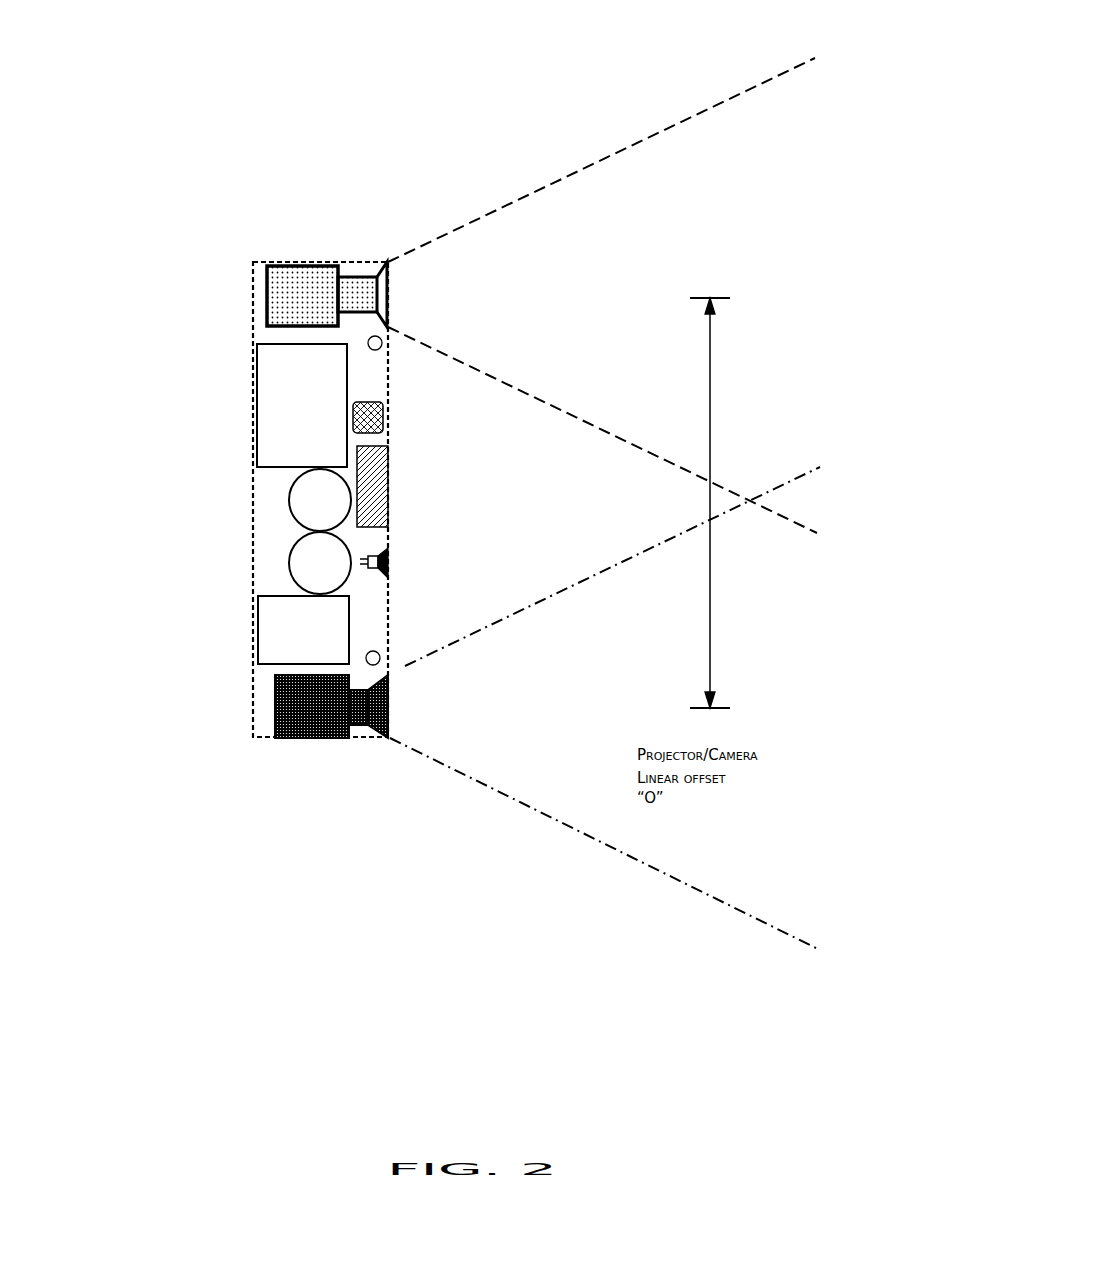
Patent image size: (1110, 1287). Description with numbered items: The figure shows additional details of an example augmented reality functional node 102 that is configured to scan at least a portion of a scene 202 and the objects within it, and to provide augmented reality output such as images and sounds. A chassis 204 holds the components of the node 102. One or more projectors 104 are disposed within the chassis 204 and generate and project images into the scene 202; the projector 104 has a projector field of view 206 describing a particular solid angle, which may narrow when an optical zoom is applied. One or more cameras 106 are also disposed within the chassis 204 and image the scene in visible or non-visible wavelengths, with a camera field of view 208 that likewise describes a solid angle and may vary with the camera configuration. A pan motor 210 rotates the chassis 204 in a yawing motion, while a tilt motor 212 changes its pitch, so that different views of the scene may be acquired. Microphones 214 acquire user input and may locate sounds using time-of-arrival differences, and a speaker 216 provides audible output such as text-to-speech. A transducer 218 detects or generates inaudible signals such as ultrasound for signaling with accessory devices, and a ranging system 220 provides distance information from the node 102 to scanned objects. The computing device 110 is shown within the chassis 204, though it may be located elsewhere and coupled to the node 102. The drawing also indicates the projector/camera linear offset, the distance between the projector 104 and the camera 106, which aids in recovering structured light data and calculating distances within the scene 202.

The augmented reality functional node 102 is at (290, 262).
The projector 104 is at (300, 296).
The camera 106 is at (277, 737).
The computing device 110 is at (303, 407).
The scene 202 is at (849, 503).
The chassis 204 is at (320, 262).
The projector field of view 206 is at (603, 152).
The camera field of view 208 is at (553, 827).
The pan motor 210 is at (289, 500).
The tilt motor 212 is at (290, 565).
The microphone 214 is at (380, 338).
The speaker 216 is at (388, 562).
The transducer 218 is at (383, 402).
The ranging system 220 is at (388, 480).